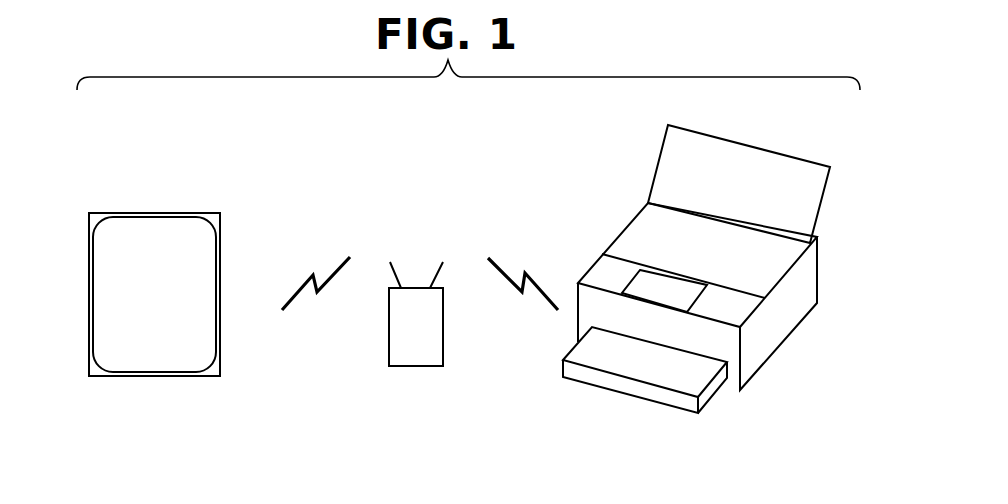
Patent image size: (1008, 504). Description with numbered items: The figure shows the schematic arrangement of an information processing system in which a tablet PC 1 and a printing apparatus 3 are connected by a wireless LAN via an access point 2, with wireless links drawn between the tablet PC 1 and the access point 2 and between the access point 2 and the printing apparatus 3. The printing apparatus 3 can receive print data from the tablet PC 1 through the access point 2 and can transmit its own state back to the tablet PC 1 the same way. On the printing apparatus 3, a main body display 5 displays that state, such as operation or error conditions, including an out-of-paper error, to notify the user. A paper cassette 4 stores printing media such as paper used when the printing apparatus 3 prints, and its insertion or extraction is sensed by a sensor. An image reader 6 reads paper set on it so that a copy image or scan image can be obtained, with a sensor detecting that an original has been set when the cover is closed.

The tablet PC 1 is at (205, 213).
The access point 2 is at (443, 348).
The printing apparatus 3 is at (817, 278).
The paper cassette 4 is at (673, 392).
The main body display 5 is at (628, 285).
The image reader 6 is at (647, 227).